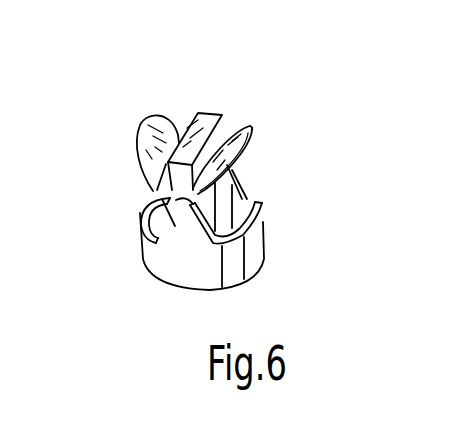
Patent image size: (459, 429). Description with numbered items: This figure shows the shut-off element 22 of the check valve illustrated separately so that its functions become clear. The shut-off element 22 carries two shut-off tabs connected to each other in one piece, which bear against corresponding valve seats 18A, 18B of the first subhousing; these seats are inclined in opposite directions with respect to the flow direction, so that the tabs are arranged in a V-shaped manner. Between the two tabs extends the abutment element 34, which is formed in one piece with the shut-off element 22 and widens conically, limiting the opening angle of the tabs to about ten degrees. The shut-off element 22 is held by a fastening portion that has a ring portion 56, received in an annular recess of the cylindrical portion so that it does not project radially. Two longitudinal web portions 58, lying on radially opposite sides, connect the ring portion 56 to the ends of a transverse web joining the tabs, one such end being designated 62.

The shut-off element 22 is at (248, 108).
The valve seat 18A is at (165, 132).
The valve seat 18B is at (252, 130).
The abutment element 34 is at (212, 114).
The ring portion 56 is at (255, 248).
The longitudinal web portions 58 is at (157, 203).
The end of transverse web 62 is at (193, 201).